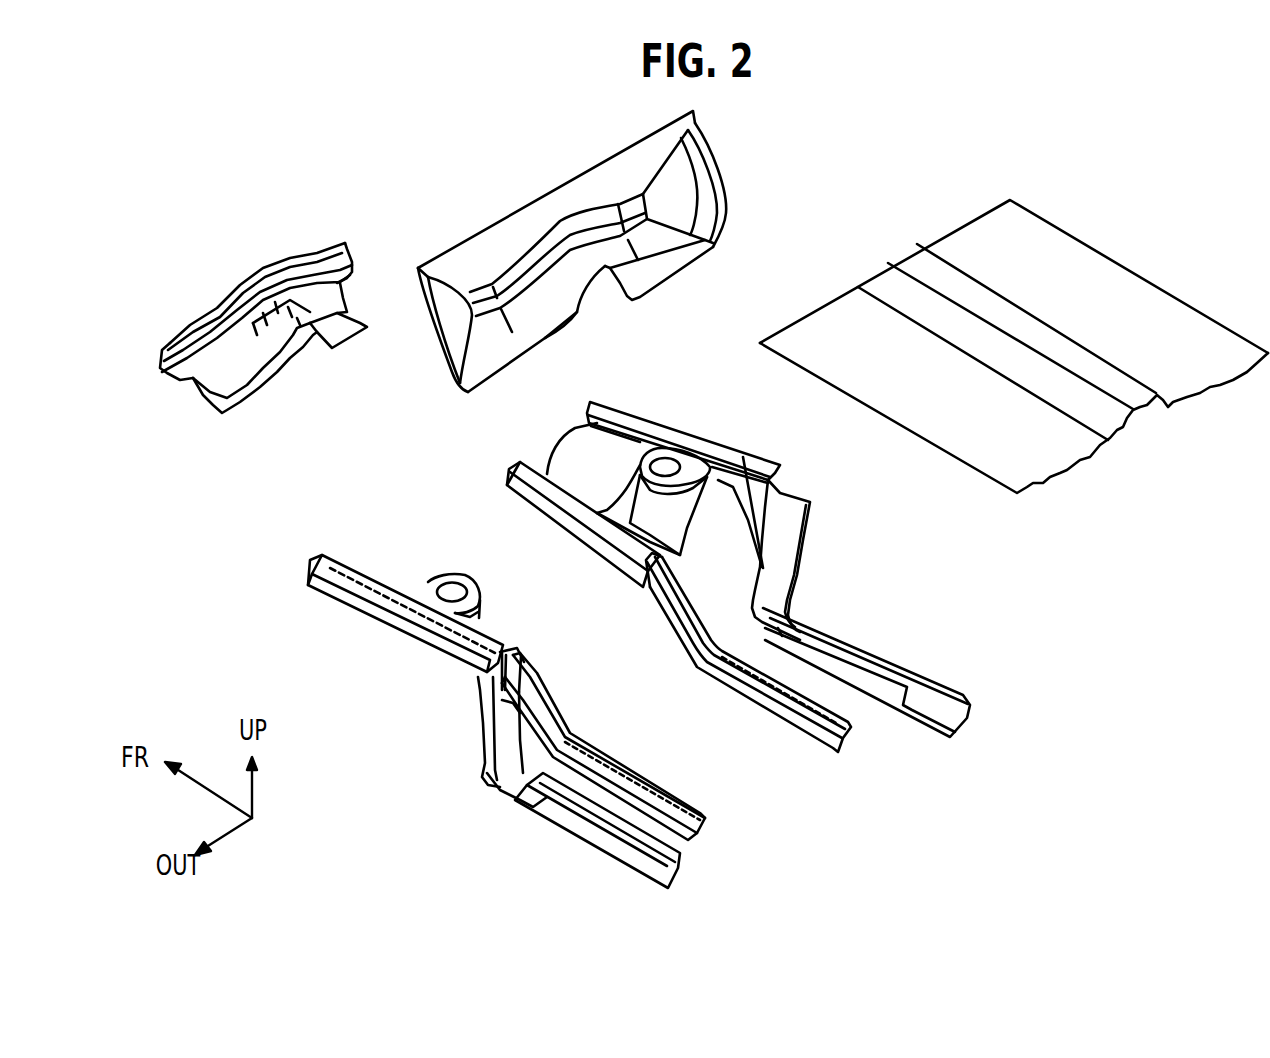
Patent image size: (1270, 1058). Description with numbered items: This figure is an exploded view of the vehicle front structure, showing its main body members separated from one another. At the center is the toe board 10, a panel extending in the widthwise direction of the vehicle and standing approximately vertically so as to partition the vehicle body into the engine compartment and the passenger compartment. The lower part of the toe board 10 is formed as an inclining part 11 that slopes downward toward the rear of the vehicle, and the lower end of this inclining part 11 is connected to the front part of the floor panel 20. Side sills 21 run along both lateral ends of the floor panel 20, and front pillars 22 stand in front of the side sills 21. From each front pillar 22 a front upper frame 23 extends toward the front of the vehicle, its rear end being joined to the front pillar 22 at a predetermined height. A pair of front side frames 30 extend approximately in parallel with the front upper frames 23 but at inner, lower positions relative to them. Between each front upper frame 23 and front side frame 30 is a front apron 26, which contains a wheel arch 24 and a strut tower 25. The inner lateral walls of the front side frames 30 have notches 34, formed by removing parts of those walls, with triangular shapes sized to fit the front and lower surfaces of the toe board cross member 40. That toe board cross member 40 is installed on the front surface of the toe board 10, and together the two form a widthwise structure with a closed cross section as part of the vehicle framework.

The toe board 10 is at (543, 190).
The inclining part 11 is at (527, 349).
The floor panel 20 is at (912, 257).
The side sill 21 is at (892, 672).
The front pillar 22 is at (783, 526).
The front upper frame 23 is at (750, 460).
The wheel arch 24 is at (612, 450).
The strut tower 25 is at (687, 452).
The front apron 26 is at (632, 363).
The front side frame 30 is at (536, 514).
The notch 34 is at (652, 588).
The toe board cross member 40 is at (238, 281).